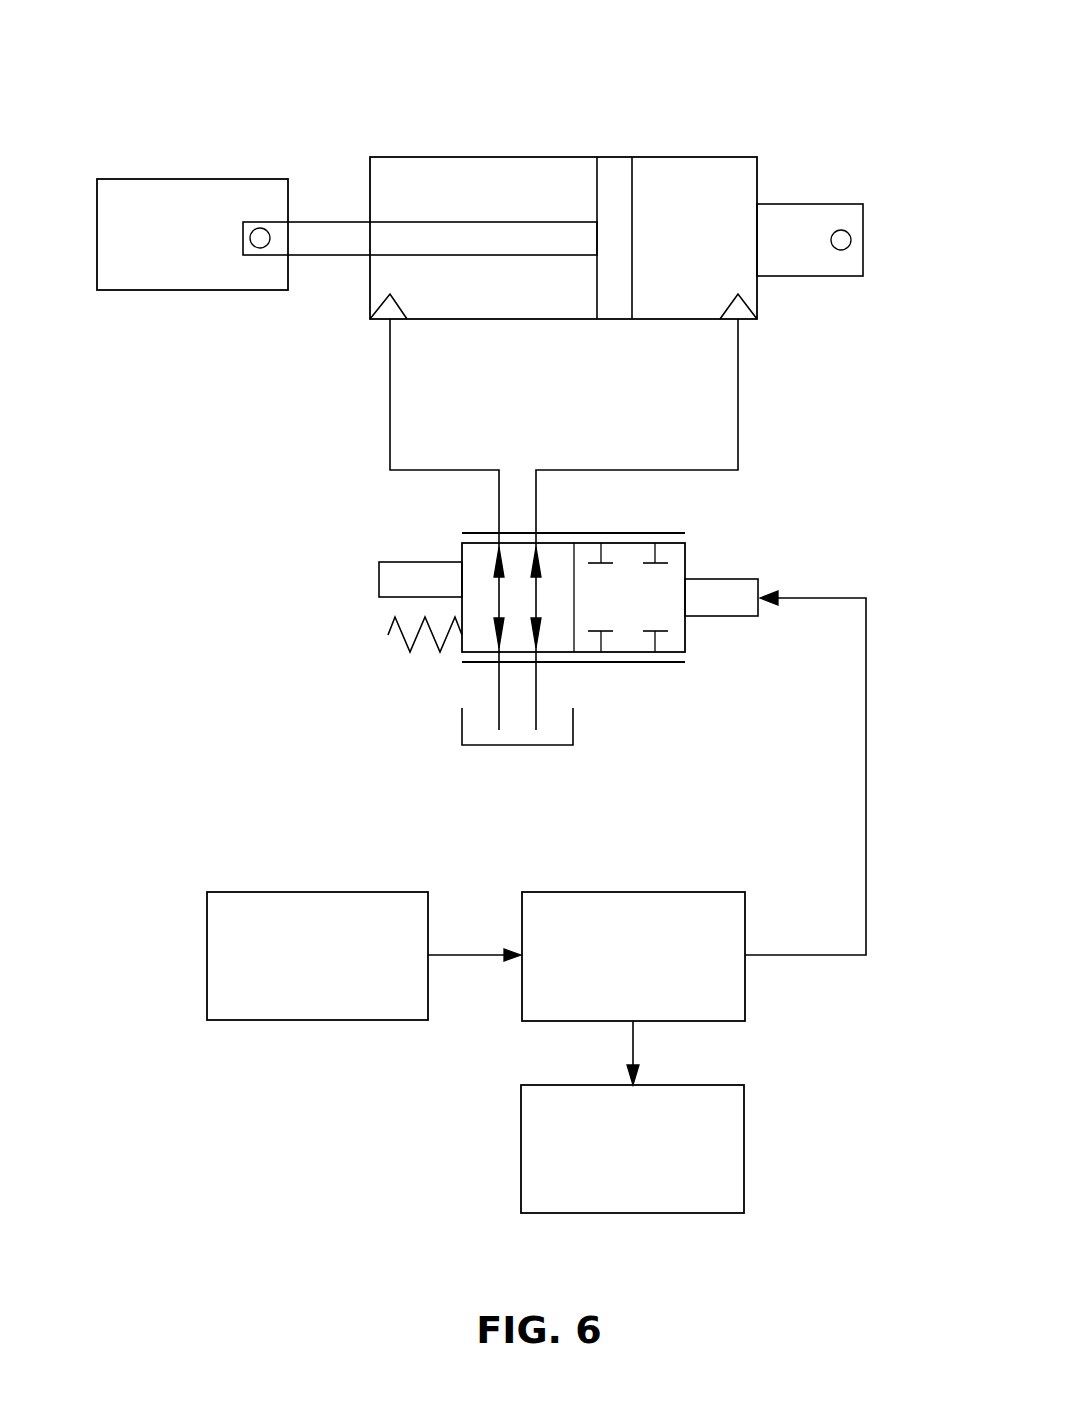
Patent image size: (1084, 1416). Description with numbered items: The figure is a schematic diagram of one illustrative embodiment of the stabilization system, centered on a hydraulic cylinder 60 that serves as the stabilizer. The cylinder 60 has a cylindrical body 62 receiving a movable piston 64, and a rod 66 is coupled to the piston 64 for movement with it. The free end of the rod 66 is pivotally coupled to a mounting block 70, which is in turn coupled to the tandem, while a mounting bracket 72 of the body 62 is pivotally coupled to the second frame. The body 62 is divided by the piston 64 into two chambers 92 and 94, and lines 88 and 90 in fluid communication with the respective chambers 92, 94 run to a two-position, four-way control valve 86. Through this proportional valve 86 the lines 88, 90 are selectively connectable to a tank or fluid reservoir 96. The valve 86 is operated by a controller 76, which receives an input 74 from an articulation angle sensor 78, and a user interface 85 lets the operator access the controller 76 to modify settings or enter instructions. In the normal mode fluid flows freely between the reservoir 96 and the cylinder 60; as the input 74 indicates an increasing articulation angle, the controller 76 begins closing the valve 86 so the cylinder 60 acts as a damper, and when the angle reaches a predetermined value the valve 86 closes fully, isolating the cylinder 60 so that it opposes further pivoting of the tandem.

The hydraulic cylinder 60 is at (838, 88).
The cylindrical body 62 is at (528, 157).
The piston 64 is at (625, 272).
The rod 66 is at (462, 242).
The mounting block 70 is at (205, 195).
The mounting bracket 72 is at (797, 211).
The input 74 is at (468, 955).
The controller 76 is at (648, 892).
The articulation angle sensor 78 is at (290, 892).
The user interface 85 is at (521, 1135).
The control valve 86 is at (366, 685).
The line 88 is at (390, 373).
The line 90 is at (740, 382).
The chamber 92 is at (437, 178).
The chamber 94 is at (678, 174).
The fluid reservoir 96 is at (573, 727).